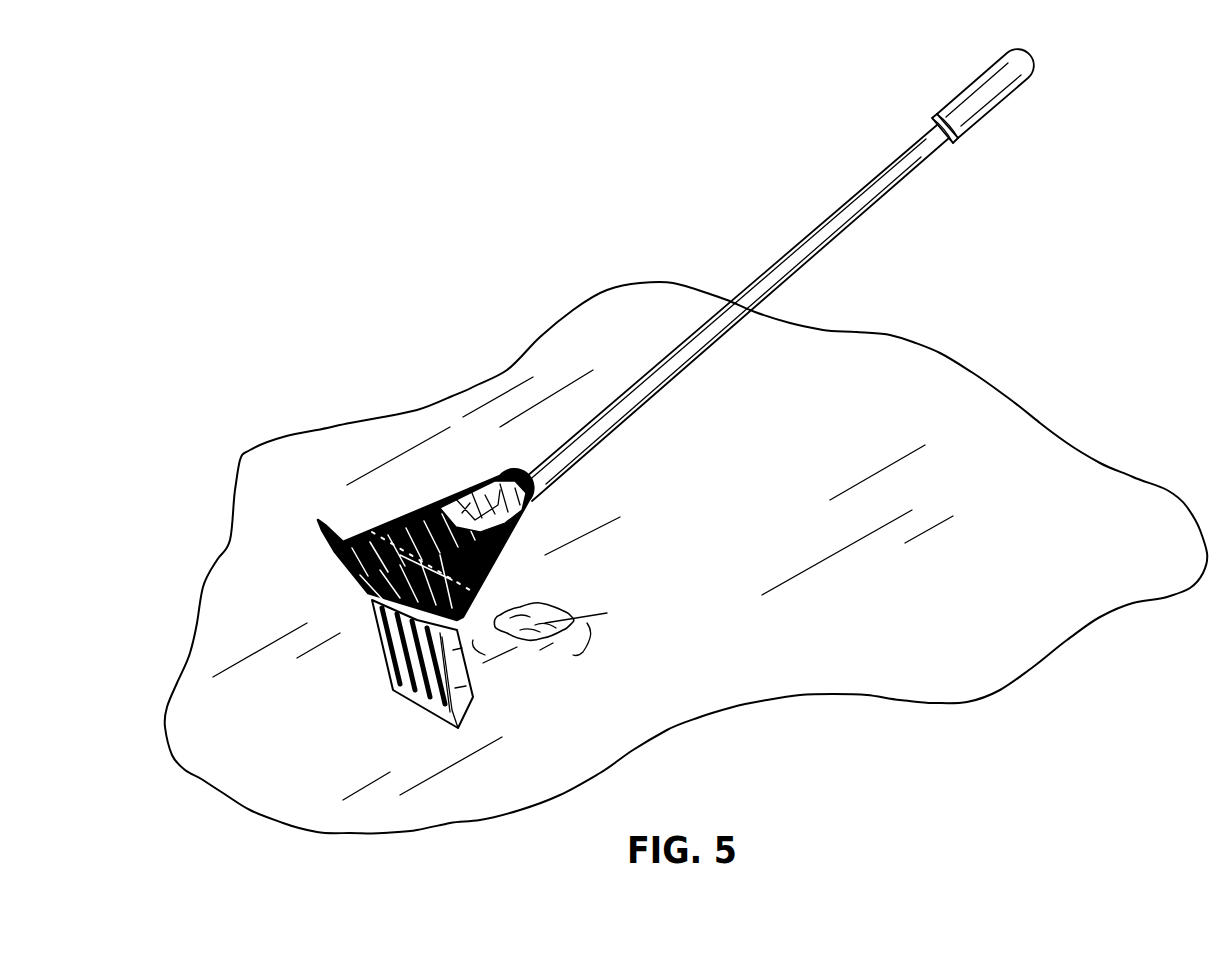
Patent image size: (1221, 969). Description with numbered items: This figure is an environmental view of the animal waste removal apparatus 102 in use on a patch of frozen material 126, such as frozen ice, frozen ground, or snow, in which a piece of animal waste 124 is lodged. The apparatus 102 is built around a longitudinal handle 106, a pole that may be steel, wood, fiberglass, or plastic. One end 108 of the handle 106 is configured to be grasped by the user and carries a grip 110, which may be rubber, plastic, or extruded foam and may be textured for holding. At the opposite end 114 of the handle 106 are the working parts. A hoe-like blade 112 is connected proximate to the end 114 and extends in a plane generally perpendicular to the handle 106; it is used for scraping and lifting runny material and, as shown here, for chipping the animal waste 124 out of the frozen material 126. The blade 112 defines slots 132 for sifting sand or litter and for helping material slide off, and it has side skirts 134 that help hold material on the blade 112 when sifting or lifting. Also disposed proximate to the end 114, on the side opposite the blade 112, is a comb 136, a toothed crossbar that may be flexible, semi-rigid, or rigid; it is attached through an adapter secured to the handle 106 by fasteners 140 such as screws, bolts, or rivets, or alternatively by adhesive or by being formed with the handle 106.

The animal waste removal apparatus 102 is at (823, 205).
The longitudinal handle 106 is at (758, 272).
The end of the handle 108 is at (907, 175).
The grip 110 is at (1027, 80).
The blade 112 is at (372, 636).
The opposite end of the handle 114 is at (545, 463).
The animal waste 124 is at (560, 620).
The frozen material 126 is at (897, 373).
The slots 132 is at (385, 645).
The skirts 134 is at (462, 667).
The comb 136 is at (318, 522).
The fasteners 140 is at (448, 507).